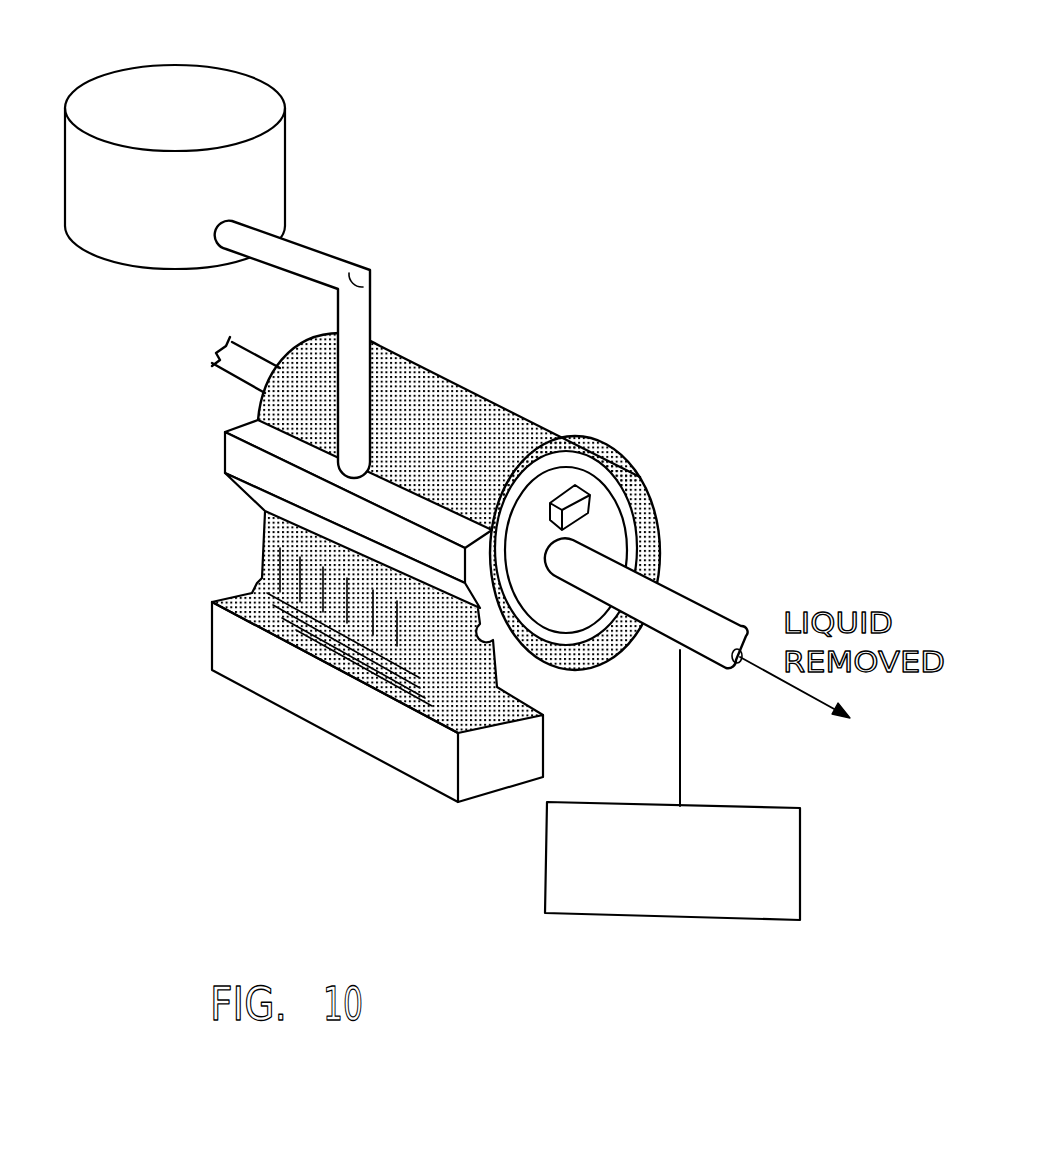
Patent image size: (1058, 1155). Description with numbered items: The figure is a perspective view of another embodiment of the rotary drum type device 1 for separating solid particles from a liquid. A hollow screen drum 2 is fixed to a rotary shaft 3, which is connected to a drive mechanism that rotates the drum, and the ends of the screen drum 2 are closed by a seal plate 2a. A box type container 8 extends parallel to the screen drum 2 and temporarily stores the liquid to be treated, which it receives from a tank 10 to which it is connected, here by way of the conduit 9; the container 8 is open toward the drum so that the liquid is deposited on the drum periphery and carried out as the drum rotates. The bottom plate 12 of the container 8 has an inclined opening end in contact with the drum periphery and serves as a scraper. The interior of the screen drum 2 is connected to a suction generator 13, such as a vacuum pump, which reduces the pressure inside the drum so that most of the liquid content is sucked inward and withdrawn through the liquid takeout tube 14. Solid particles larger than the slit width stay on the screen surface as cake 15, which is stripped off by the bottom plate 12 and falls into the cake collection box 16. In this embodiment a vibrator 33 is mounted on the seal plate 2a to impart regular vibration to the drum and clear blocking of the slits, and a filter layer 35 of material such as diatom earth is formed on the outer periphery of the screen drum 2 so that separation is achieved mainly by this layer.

The rotary drum type device 1 is at (588, 178).
The screen drum 2 is at (403, 347).
The seal plate 2a is at (568, 622).
The rotary shaft 3 is at (250, 367).
The box type container 8 is at (252, 463).
The liquid supply tube 9 is at (333, 270).
The tank 10 is at (253, 165).
The bottom plate 12 is at (342, 537).
The suction generator 13 is at (720, 806).
The liquid takeout tube 14 is at (703, 602).
The cake 15 is at (448, 402).
The cake collection box 16 is at (377, 737).
The vibrator 33 is at (583, 490).
The filter layer 35 is at (632, 527).